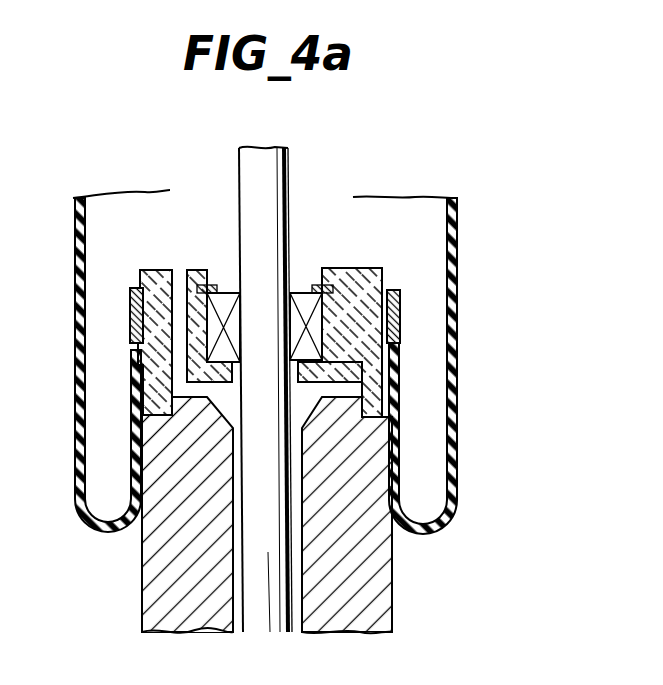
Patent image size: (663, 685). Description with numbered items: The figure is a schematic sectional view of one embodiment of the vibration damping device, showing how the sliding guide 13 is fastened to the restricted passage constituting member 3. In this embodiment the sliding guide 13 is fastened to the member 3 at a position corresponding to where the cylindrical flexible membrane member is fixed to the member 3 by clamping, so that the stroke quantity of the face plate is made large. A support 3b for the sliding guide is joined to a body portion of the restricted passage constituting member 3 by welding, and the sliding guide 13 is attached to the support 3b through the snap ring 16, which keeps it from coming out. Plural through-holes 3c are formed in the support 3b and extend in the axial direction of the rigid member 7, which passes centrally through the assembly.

The restricted passage constituting member 3 is at (395, 572).
The support for the sliding guide 3b is at (365, 280).
The through-holes 3c is at (180, 277).
The rigid member 7 is at (284, 176).
The sliding guide 13 is at (315, 337).
The snap ring 16 is at (308, 283).